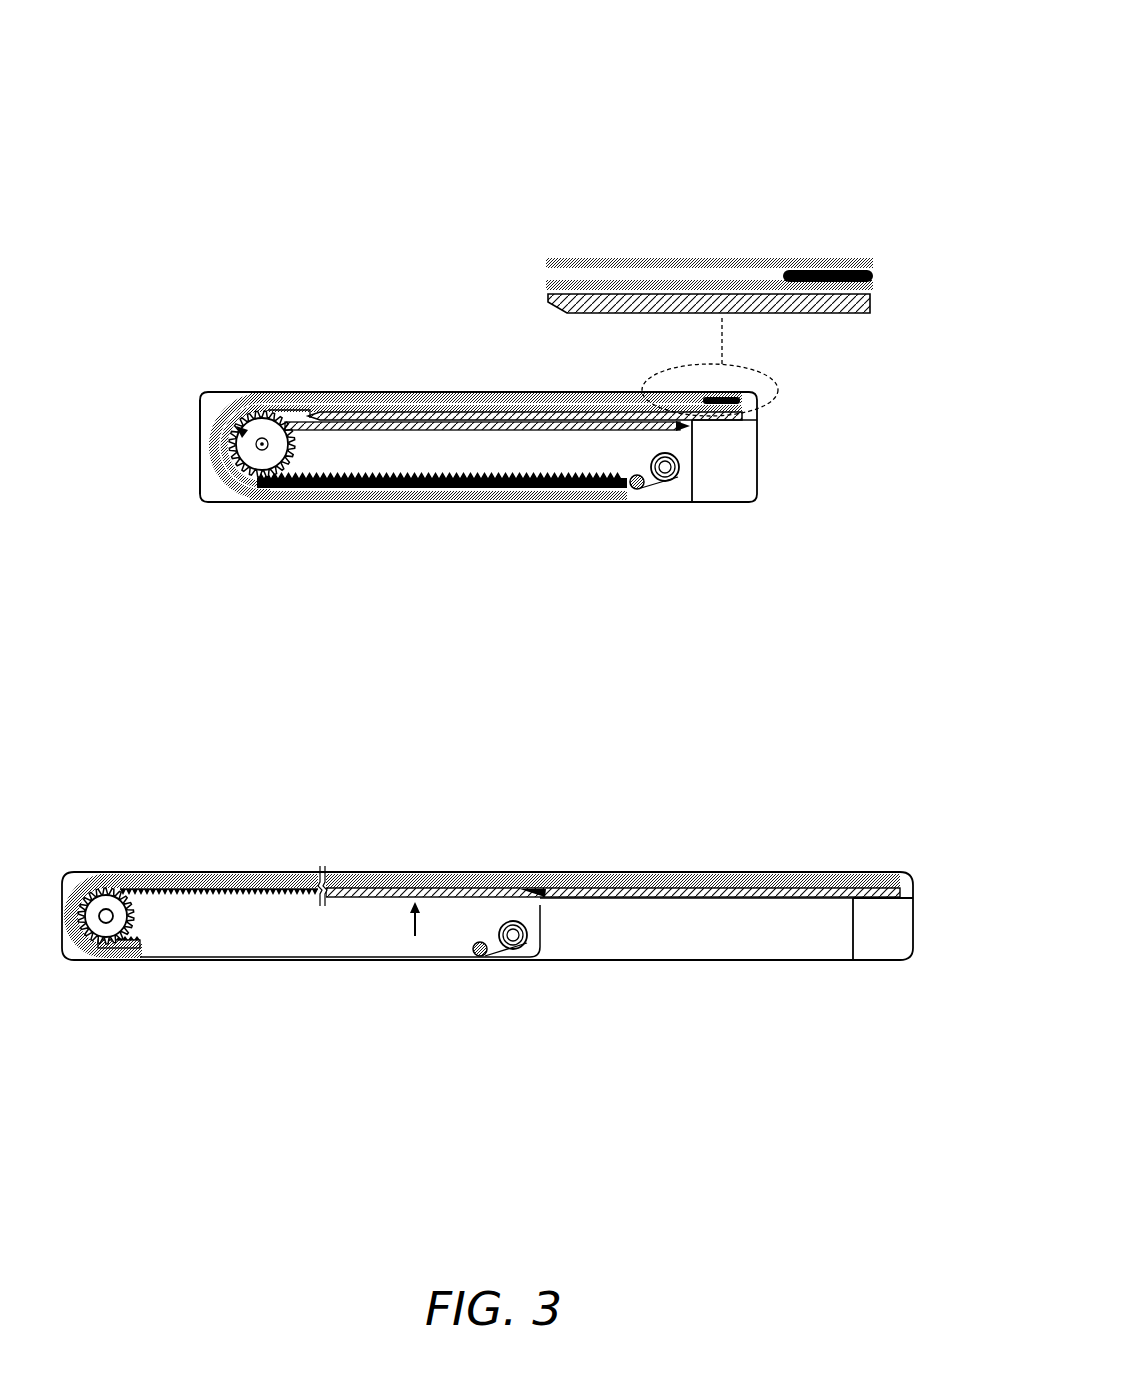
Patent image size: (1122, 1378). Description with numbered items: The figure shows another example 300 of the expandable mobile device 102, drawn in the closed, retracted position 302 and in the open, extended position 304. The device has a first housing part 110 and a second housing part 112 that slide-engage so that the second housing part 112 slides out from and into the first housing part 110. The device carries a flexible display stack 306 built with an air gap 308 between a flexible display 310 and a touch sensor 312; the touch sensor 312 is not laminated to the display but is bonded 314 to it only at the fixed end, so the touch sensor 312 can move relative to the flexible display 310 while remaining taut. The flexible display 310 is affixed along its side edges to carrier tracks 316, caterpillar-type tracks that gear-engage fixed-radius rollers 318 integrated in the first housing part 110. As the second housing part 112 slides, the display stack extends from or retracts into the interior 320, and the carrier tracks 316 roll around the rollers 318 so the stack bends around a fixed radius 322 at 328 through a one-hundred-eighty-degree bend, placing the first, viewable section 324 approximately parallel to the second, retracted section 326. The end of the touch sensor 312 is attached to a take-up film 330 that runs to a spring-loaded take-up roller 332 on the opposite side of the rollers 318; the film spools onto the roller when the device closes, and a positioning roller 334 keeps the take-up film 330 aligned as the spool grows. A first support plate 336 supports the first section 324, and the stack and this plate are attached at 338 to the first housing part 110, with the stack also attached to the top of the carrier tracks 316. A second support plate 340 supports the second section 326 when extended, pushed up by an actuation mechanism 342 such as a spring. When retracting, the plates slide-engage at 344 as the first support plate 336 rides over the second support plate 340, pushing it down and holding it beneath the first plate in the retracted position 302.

The example of the expandable mobile device 300 is at (717, 66).
The closed, retracted position 302 is at (348, 280).
The open, extended position 304 is at (586, 760).
The flexible display stack 306 is at (752, 226).
The air gap 308 is at (585, 278).
The flexible display 310 is at (548, 286).
The touch sensor 312 is at (648, 258).
The bond of touch sensor to flexible display 314 is at (838, 264).
The carrier tracks 316 is at (279, 414).
The rollers 318 is at (266, 454).
The interior 320 is at (428, 455).
The fixed radius 322 is at (243, 434).
The first, viewable section 324 is at (405, 392).
The second, retracted section 326 is at (447, 495).
The bend of flexible display stack 328 is at (201, 418).
The take-up film 330 is at (345, 950).
The take-up roller 332 is at (672, 470).
The positioning roller 334 is at (640, 486).
The first support plate 336 is at (718, 395).
The attachment of display stack and first support plate 338 is at (750, 394).
The second support plate 340 is at (507, 430).
The actuation mechanism 342 is at (401, 941).
The slide-engagement of support plates 344 is at (548, 910).
The expandable mobile device 102 is at (495, 548).
The first housing part 110 is at (290, 484).
The second housing part 112 is at (723, 503).